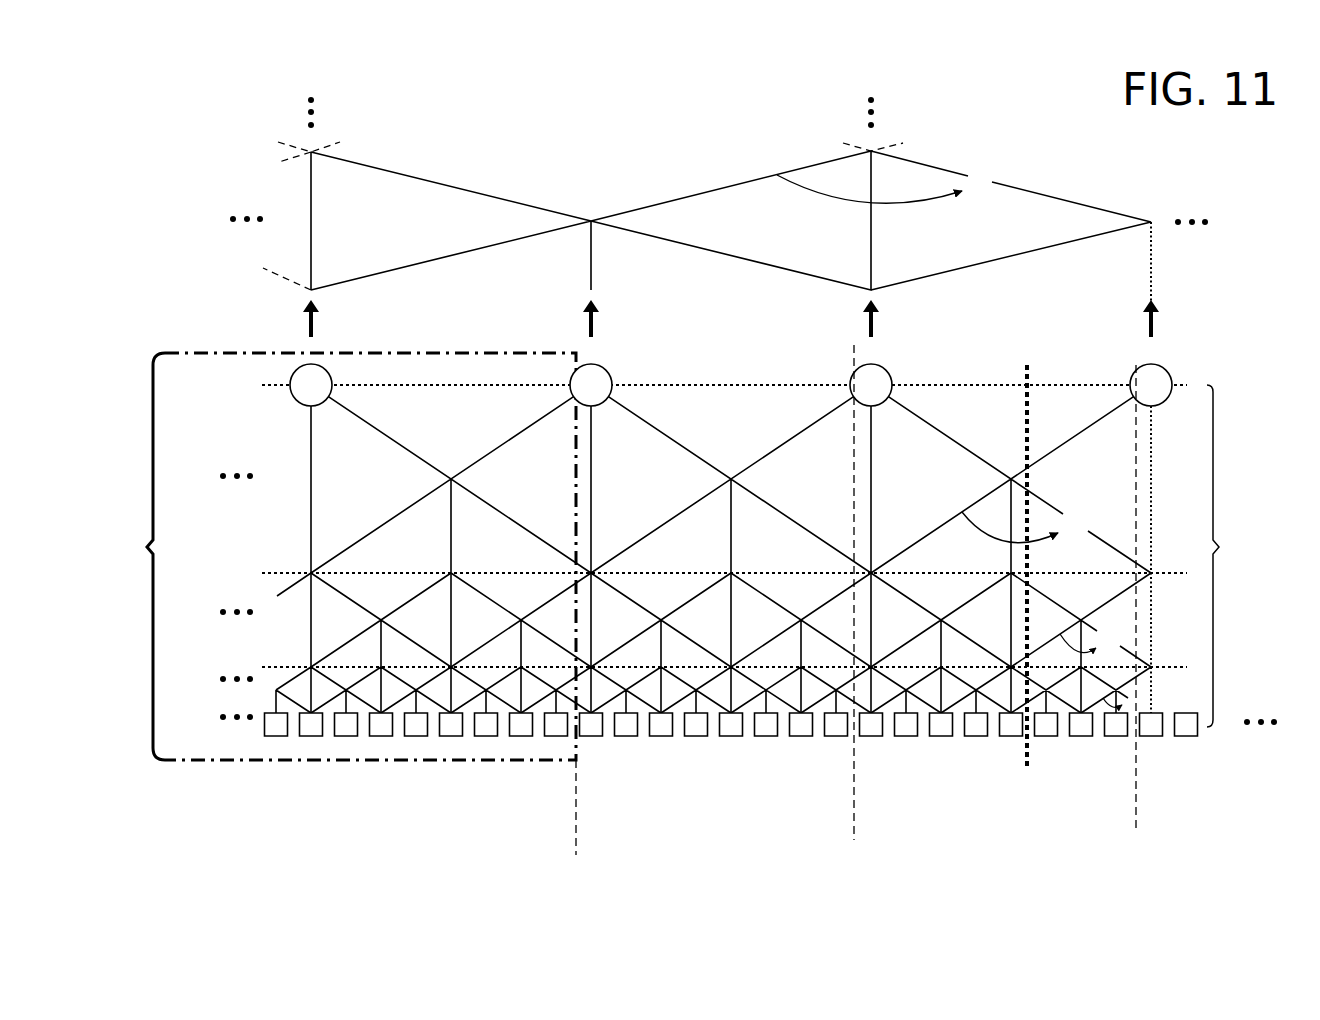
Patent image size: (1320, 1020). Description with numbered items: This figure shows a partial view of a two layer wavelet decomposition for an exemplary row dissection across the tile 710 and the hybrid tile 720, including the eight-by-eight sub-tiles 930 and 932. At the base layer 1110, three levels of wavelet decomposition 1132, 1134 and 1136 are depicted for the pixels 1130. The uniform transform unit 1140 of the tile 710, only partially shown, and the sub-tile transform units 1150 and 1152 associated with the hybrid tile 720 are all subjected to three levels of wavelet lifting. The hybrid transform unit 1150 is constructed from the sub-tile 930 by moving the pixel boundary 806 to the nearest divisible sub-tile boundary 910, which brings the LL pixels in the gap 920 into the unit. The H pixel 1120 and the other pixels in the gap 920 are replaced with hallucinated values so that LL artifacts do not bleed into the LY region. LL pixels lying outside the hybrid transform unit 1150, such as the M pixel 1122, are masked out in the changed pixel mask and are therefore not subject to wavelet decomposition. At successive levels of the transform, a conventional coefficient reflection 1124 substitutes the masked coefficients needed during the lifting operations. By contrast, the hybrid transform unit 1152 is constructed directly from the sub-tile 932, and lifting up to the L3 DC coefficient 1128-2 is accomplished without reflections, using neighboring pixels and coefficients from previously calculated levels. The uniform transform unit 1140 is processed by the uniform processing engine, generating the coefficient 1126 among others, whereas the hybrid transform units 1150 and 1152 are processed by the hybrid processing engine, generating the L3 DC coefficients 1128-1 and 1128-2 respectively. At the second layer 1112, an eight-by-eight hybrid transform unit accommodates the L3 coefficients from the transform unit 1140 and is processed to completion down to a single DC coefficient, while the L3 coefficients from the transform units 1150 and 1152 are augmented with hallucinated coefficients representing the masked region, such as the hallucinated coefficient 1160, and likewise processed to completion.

The second layer 1112 is at (217, 82).
The uniform transform unit 1140 is at (340, 556).
The third level of wavelet decomposition 1136 is at (215, 385).
The second level of wavelet decomposition 1134 is at (215, 567).
The first level of wavelet decomposition 1132 is at (215, 657).
The pixels 1130 is at (215, 701).
The coefficient 1126 is at (328, 374).
The L3 DC coefficient 1128-2 is at (604, 364).
The L3 DC coefficient 1128-1 is at (884, 364).
The pixel boundary 806 is at (1025, 366).
The hallucinated coefficient 1160 is at (1167, 372).
The sub-tile boundary 910 is at (1133, 483).
The reflection 1124 is at (988, 540).
The base layer 1110 is at (1231, 556).
The H pixel 1120 is at (1138, 737).
The M pixel 1122 is at (1200, 737).
The gap 920 is at (1136, 758).
The hybrid transform unit 1152 is at (854, 795).
The hybrid transform unit 1150 is at (1136, 795).
The sub-tile 932 is at (854, 830).
The sub-tile 930 is at (1136, 830).
The tile 710 is at (585, 848).
The hybrid tile 720 is at (1227, 854).